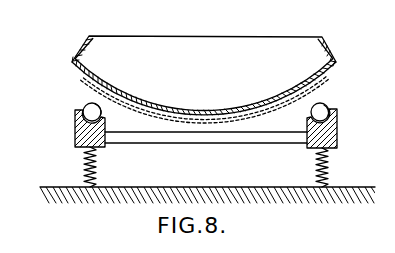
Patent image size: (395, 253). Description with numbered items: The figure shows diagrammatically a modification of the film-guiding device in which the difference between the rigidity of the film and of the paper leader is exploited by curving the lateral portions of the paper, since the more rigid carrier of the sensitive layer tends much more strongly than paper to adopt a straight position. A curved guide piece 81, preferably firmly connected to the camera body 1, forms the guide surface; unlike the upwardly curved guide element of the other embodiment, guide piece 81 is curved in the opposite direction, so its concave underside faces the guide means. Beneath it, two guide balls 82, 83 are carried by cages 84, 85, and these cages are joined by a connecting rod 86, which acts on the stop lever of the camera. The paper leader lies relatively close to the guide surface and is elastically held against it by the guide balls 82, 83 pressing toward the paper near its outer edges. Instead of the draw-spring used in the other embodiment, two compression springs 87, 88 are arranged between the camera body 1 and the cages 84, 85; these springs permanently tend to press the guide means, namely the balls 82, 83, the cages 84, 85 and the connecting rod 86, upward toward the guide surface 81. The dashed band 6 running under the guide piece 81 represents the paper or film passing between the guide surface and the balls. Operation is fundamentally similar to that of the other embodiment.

The camera body 1 is at (50, 195).
The belt/screen 6 is at (135, 108).
The guide piece 81 is at (332, 56).
The guide ball 82 is at (86, 108).
The guide ball 83 is at (326, 109).
The cage 84 is at (75, 127).
The cage 85 is at (337, 129).
The connecting rod 86 is at (203, 139).
The compression spring 87 is at (85, 163).
The compression spring 88 is at (328, 170).